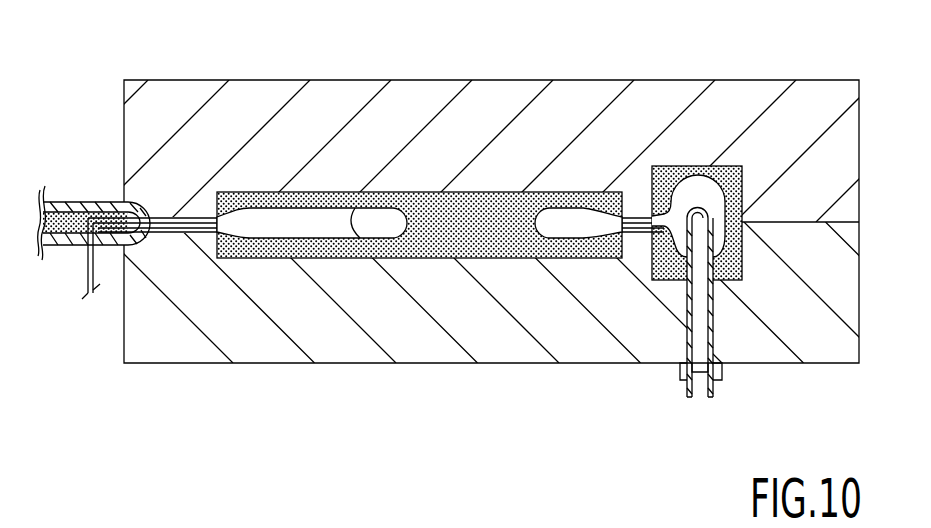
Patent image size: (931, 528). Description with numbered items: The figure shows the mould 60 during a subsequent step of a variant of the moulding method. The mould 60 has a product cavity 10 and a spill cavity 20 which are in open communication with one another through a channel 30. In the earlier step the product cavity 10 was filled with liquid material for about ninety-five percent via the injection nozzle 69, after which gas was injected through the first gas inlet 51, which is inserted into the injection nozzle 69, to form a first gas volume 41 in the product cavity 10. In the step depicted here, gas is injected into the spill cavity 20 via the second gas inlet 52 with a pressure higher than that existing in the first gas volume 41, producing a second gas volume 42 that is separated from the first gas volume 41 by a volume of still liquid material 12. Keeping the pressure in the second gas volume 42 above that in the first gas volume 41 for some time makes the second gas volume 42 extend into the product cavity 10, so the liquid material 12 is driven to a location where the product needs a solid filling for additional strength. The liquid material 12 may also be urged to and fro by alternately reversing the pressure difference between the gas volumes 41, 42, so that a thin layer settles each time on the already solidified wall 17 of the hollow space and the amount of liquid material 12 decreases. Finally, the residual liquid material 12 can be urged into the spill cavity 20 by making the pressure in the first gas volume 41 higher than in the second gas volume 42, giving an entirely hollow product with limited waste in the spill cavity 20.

The mould 60 is at (108, 82).
The injection nozzle 69 is at (58, 202).
The first gas inlet 51 is at (110, 203).
The first gas volume 41 is at (320, 218).
The liquid material 12 is at (462, 200).
The second gas volume 42 is at (572, 222).
The solidified wall 17 is at (360, 238).
The product cavity 10 is at (419, 223).
The channel 30 is at (638, 238).
The spill cavity 20 is at (716, 258).
The second gas inlet 52 is at (710, 209).